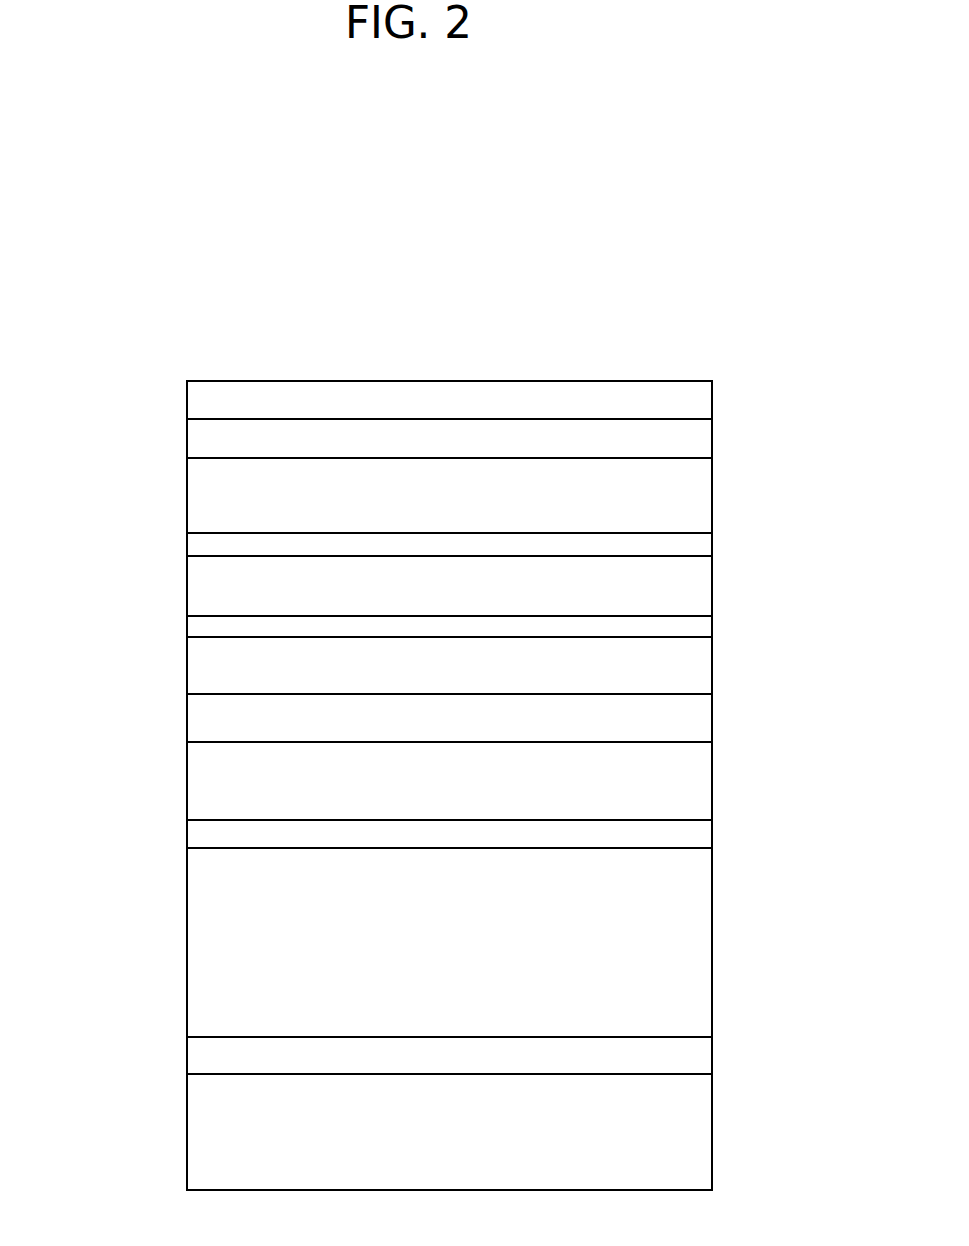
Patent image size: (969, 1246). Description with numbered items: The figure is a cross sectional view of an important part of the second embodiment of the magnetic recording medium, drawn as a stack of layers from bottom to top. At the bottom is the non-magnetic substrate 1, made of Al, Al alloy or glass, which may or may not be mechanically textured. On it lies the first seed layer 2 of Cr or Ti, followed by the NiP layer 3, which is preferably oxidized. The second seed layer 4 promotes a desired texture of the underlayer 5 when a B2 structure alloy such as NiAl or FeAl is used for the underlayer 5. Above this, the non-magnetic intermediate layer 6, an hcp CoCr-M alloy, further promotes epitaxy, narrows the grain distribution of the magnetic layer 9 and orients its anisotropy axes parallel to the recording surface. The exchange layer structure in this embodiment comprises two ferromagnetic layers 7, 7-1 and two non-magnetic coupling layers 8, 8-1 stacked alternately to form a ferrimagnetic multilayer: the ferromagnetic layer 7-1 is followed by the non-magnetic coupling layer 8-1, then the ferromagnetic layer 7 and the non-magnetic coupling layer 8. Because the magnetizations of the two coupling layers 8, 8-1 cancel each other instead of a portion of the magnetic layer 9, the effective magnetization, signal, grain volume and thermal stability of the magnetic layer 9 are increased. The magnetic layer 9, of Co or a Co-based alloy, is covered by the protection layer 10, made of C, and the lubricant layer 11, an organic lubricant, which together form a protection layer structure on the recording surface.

The non-magnetic substrate 1 is at (702, 1136).
The first seed layer 2 is at (745, 1055).
The NiP layer 3 is at (745, 945).
The second seed layer 4 is at (745, 833).
The underlayer 5 is at (745, 781).
The non-magnetic intermediate layer 6 is at (745, 719).
The ferromagnetic layer 7 is at (157, 588).
The ferromagnetic layer 7-1 is at (157, 667).
The non-magnetic coupling layer 8 is at (157, 550).
The non-magnetic coupling layer 8-1 is at (157, 627).
The magnetic layer 9 is at (745, 498).
The protection layer 10 is at (745, 440).
The lubricant layer 11 is at (745, 402).